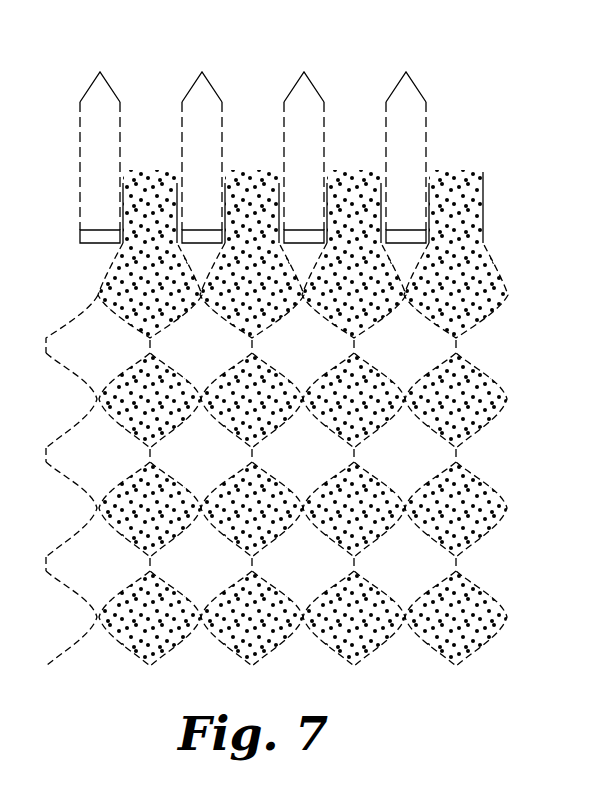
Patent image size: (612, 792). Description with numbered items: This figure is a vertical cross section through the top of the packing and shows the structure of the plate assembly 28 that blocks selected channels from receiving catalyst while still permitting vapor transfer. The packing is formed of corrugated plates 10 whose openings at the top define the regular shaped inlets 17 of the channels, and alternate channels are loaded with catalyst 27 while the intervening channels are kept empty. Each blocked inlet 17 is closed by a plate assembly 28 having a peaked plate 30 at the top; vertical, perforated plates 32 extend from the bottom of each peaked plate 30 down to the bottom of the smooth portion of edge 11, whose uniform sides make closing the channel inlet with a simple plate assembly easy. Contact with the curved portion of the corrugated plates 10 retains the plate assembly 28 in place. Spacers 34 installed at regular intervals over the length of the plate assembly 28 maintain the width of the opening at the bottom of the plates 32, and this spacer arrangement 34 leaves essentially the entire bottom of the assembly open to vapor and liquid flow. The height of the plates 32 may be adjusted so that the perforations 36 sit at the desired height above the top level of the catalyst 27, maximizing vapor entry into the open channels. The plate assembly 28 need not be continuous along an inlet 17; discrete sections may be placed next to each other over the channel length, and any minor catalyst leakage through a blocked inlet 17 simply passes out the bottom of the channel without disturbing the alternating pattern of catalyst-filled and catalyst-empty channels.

The corrugated plates 10 is at (424, 277).
The smooth portion of edge 11 is at (433, 223).
The inlet 17 is at (395, 225).
The catalyst 27 is at (143, 197).
The plate assembly 28 is at (440, 73).
The peaked plate 30 is at (415, 82).
The perforated plates 32 is at (386, 148).
The spacers 34 is at (410, 236).
The perforations 36 is at (223, 113).